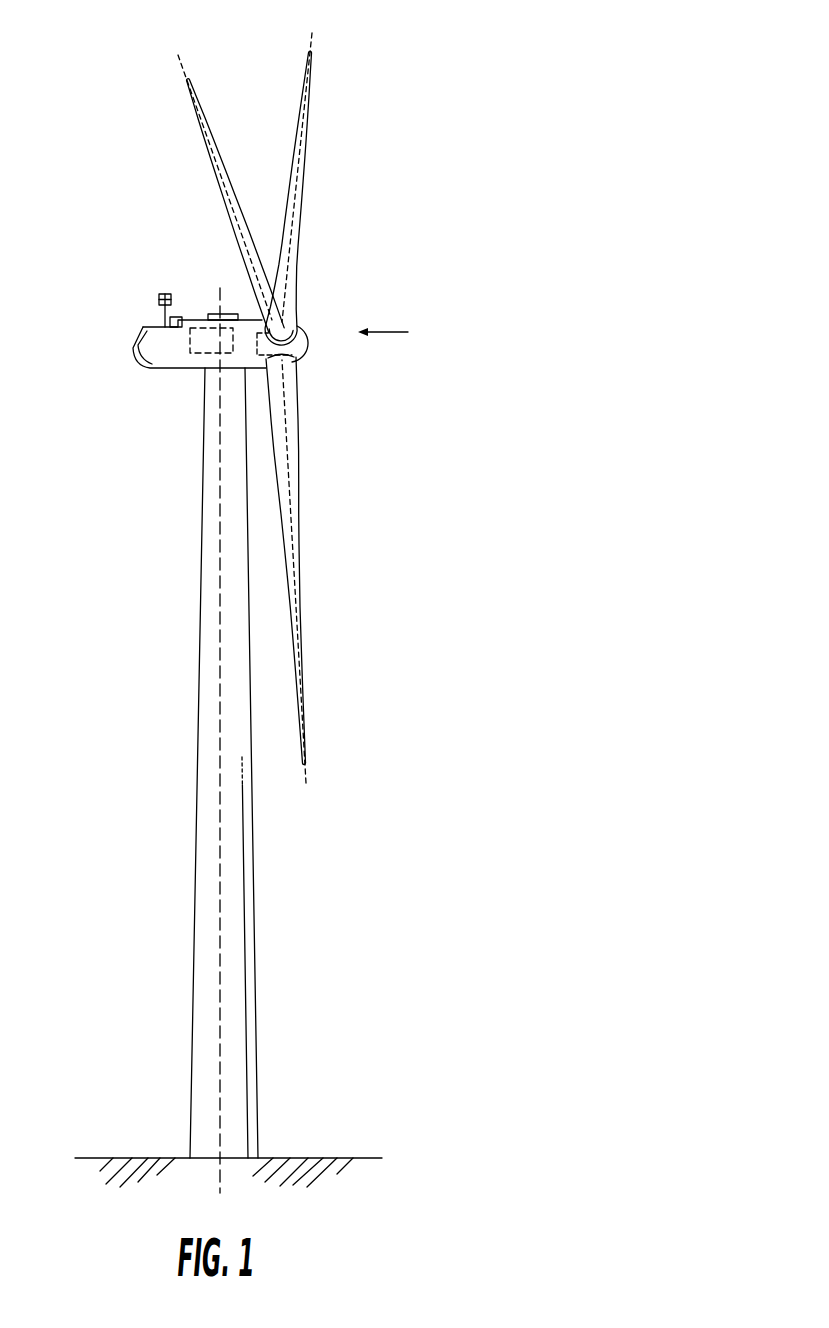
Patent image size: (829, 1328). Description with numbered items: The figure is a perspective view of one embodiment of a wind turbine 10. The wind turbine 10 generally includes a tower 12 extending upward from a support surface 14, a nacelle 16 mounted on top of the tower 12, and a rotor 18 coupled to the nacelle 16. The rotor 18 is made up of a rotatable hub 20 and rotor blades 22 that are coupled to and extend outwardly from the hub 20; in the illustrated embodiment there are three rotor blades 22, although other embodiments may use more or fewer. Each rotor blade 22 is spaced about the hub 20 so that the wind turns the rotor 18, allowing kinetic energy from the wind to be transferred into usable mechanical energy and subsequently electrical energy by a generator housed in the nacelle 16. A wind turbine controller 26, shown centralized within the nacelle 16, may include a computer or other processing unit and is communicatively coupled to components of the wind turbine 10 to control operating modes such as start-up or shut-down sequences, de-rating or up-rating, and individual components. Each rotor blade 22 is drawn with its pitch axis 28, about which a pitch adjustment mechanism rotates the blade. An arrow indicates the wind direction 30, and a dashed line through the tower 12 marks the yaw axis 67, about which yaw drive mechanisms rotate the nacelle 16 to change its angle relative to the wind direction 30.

The wind turbine 10 is at (436, 124).
The tower 12 is at (210, 827).
The support surface 14 is at (147, 1158).
The nacelle 16 is at (172, 373).
The rotor 18 is at (318, 312).
The rotatable hub 20 is at (303, 352).
The rotor blade 22 is at (288, 212).
The wind turbine controller 26 is at (202, 318).
The pitch axis 28 is at (203, 145).
The wind direction 30 is at (400, 333).
The yaw axis 67 is at (218, 568).